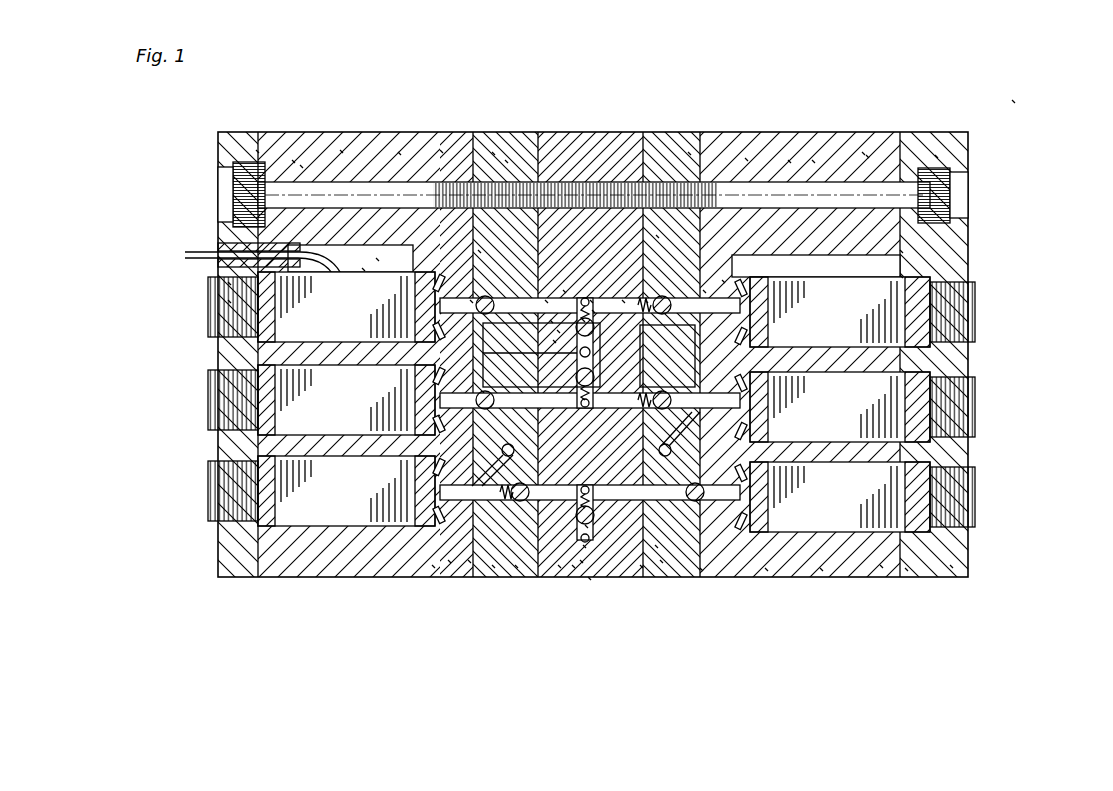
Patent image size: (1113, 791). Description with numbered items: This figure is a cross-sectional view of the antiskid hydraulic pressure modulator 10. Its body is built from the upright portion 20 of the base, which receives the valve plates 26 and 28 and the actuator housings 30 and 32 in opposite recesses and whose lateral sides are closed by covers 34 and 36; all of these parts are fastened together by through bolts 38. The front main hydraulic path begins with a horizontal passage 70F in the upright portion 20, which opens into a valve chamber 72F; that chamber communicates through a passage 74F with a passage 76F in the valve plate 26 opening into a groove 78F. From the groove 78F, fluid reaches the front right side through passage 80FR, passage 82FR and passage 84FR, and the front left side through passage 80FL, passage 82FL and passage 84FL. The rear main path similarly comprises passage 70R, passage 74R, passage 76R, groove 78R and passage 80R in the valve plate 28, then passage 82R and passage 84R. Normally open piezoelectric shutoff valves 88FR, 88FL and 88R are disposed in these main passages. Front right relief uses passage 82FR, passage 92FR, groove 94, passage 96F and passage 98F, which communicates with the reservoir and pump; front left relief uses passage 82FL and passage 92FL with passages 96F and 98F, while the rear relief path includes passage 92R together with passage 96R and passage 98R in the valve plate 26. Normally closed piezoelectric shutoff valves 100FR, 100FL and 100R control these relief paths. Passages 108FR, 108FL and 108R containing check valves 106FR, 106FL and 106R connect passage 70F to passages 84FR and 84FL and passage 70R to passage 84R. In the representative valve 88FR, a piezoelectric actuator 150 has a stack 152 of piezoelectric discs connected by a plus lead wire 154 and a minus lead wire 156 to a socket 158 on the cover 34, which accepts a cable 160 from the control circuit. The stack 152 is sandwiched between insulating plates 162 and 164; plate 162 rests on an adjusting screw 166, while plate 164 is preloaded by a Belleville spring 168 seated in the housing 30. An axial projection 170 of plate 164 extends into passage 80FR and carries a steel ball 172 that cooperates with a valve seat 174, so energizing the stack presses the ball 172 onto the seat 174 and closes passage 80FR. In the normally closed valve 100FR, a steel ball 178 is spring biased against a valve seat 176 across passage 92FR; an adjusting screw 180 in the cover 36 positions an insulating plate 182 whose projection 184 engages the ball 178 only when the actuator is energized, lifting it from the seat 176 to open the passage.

The antiskid hydraulic pressure modulator 10 is at (1021, 97).
The upright portion 20 is at (588, 577).
The valve plate 26 is at (478, 250).
The valve plate 28 is at (688, 152).
The actuator housing 30 is at (300, 165).
The actuator housing 32 is at (862, 152).
The cover 34 is at (256, 150).
The cover 36 is at (935, 155).
The through bolts 38 is at (245, 188).
The horizontal passage 70F is at (656, 235).
The passage 70R is at (580, 560).
The valve chamber 72F is at (563, 290).
The horizontal passage 74F is at (557, 330).
The passage 74R is at (640, 565).
The horizontal passage 76F is at (553, 340).
The passage 76R is at (660, 560).
The groove 78F is at (550, 320).
The groove 78R is at (820, 568).
The passage 80FR is at (545, 300).
The passage 80FL is at (432, 565).
The passage 80R is at (765, 568).
The passage 82FR is at (592, 310).
The passage 82FL is at (515, 565).
The passage 82R is at (655, 545).
The passage 84FR is at (622, 300).
The passage 84FL is at (558, 565).
The passage 84R is at (572, 565).
The normally open piezoelectric shutoff valve 88FR is at (380, 251).
The normally open piezoelectric shutoff valve 88FL is at (300, 330).
The normally open piezoelectric valve 88R is at (905, 568).
The passage 92FR is at (703, 290).
The passage 92FL is at (880, 290).
The rear piston 92R is at (492, 565).
The groove 94 is at (788, 160).
The passage 96F is at (950, 565).
The passage 96R is at (448, 560).
The passage 98F is at (880, 565).
The passage 98R is at (468, 560).
The normally closed piezoelectric shutoff valve 100FR is at (866, 155).
The normally closed piezoelectric shutoff valve 100FL is at (880, 520).
The normally closed piezoelectric shutoff valve 100R is at (321, 442).
The check valve 106FR is at (590, 300).
The check valve 106FL is at (900, 275).
The check valve 106R is at (583, 545).
The passage 108FR is at (645, 300).
The passage 108FL is at (700, 568).
The passage 108R is at (585, 525).
The piezoelectric actuator 150 is at (364, 260).
The stack of piezoelectric discs 152 is at (330, 348).
The plus lead wire 154 is at (340, 150).
The minus lead wire 156 is at (292, 160).
The socket 158 is at (232, 245).
The cable 160 is at (200, 253).
The insulating plate 162 is at (228, 282).
The insulating plate 164 is at (398, 152).
The adjusting screw 166 is at (228, 300).
The Belleville spring 168 is at (440, 150).
The axial projection 170 is at (470, 300).
The steel ball 172 is at (492, 152).
The valve seat 174 is at (505, 160).
The valve seat 176 is at (745, 158).
The steel ball 178 is at (722, 280).
The adjusting screw 180 is at (935, 305).
The insulating plate 182 is at (900, 250).
The projection 184 is at (812, 160).